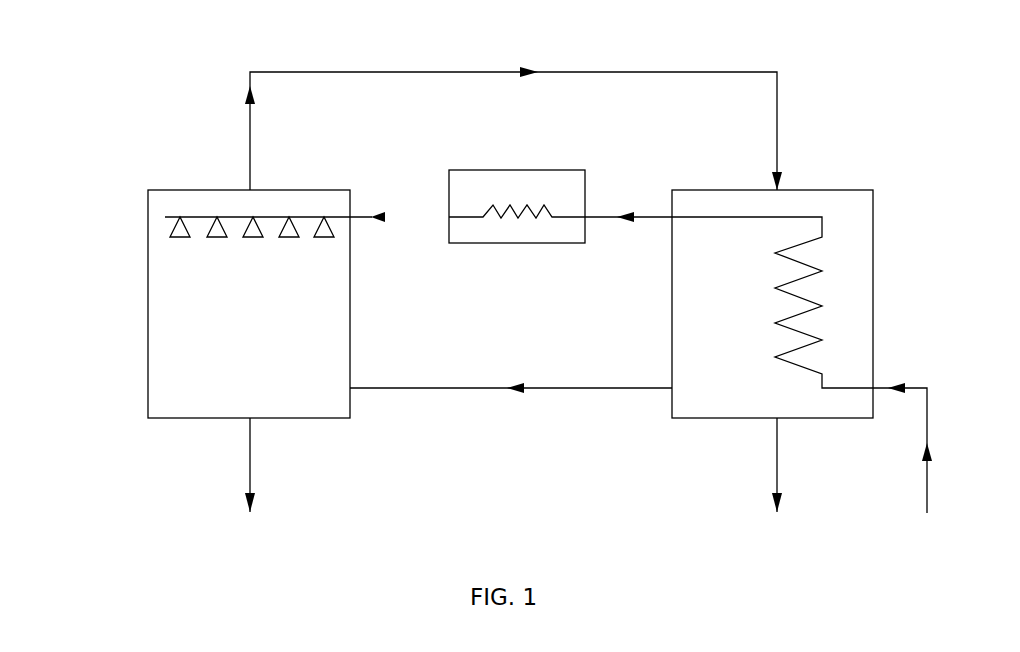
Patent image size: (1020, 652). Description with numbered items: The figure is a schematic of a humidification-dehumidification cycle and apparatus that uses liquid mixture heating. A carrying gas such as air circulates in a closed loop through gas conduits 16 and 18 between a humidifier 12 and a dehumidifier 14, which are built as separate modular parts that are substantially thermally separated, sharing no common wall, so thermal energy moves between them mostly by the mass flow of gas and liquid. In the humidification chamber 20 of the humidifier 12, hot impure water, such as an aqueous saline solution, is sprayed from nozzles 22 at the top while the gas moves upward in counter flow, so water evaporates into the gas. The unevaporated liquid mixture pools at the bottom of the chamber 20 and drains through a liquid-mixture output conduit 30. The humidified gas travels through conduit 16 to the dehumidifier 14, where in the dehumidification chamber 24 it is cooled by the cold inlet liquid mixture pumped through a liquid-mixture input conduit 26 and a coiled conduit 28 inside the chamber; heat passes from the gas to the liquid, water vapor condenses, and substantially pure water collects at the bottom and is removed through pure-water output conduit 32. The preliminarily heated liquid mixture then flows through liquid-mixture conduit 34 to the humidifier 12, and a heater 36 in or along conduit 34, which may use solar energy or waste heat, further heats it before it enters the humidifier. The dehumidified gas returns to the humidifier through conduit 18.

The humidifier 12 is at (124, 322).
The dehumidifier 14 is at (634, 322).
The gas conduit 16 is at (295, 72).
The gas conduit 18 is at (550, 388).
The humidification chamber 20 is at (268, 370).
The nozzles 22 is at (320, 248).
The dehumidification chamber 24 is at (742, 310).
The liquid-mixture input conduit 26 is at (926, 497).
The coiled conduit 28 is at (783, 326).
The liquid-mixture output conduit 30 is at (250, 460).
The pure-water output conduit 32 is at (777, 460).
The liquid-mixture conduit 34 is at (598, 217).
The heater 36 is at (551, 184).